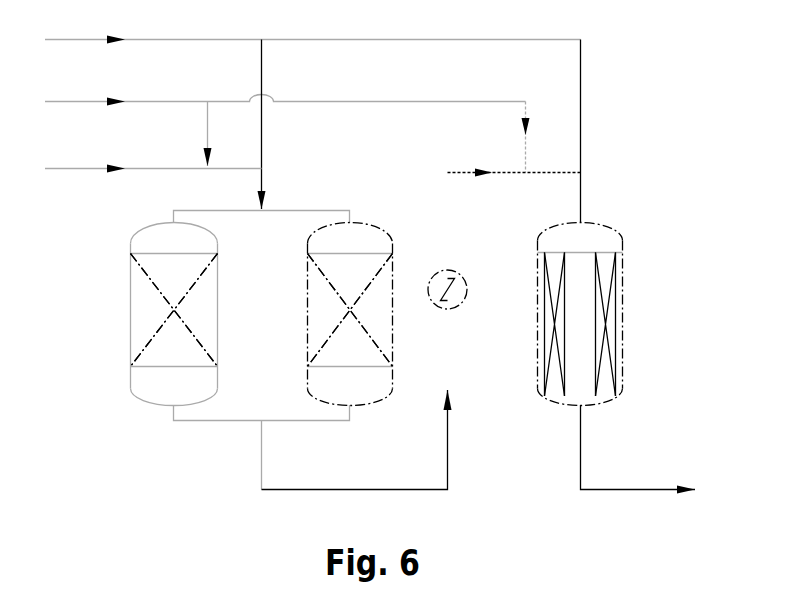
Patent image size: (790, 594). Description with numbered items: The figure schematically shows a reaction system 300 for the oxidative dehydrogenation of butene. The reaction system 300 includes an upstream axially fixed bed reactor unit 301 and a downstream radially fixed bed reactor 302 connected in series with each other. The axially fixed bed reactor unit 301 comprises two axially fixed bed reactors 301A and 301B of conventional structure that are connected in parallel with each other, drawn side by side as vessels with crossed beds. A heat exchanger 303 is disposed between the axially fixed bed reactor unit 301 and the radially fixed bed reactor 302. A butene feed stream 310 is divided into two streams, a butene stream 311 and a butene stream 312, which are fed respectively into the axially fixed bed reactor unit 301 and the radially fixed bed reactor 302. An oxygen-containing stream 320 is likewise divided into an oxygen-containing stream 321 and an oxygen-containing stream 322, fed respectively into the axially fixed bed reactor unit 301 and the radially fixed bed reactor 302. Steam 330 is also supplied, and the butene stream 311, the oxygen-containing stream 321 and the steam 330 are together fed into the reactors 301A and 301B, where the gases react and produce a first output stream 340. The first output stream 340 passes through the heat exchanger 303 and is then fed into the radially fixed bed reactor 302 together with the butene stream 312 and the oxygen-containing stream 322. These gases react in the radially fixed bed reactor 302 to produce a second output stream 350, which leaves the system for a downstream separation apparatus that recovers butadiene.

The reaction system 300 is at (146, 462).
The axially fixed bed reactor unit 301 is at (118, 240).
The axially fixed bed reactor 301A is at (278, 346).
The axially fixed bed reactor 301B is at (444, 346).
The radially fixed bed reactor 302 is at (622, 364).
The heat exchanger 303 is at (456, 278).
The butene feed stream 310 is at (313, 30).
The butene stream 311 is at (281, 125).
The butene stream 312 is at (559, 131).
The oxygen-containing stream 320 is at (285, 92).
The oxygen-containing stream 321 is at (226, 134).
The oxygen-containing stream 322 is at (514, 139).
The steam 330 is at (153, 158).
The first output stream 340 is at (357, 440).
The second output stream 350 is at (638, 449).